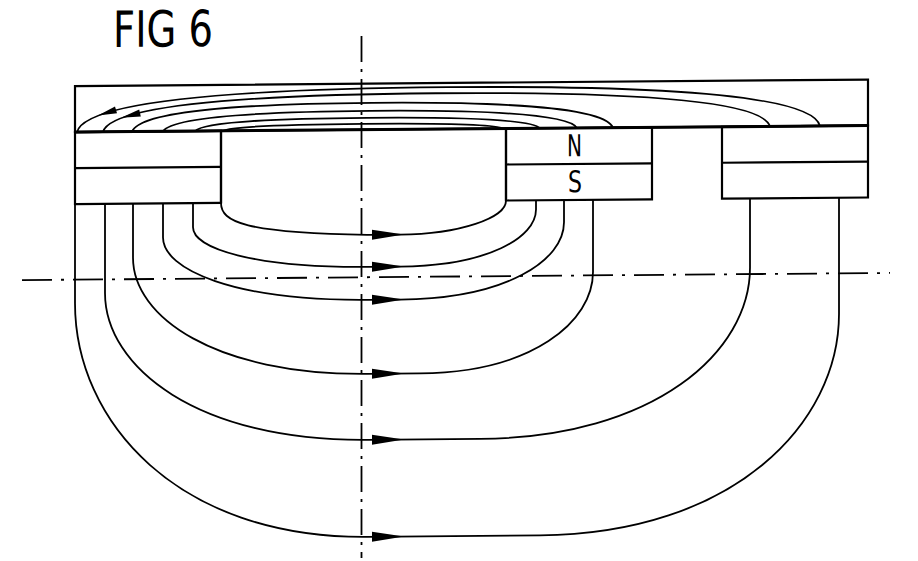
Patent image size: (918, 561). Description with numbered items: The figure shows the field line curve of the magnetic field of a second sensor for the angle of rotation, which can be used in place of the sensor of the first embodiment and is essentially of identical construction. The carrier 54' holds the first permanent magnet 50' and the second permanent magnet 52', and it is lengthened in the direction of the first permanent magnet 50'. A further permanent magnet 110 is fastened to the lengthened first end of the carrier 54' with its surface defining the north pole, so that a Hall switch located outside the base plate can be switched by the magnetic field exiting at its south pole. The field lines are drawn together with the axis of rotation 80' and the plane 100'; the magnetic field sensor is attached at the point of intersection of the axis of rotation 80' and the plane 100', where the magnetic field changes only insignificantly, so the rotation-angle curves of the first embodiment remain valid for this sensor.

The first permanent magnet 50' is at (363, 184).
The second permanent magnet 52' is at (124, 154).
The carrier 54' is at (471, 76).
The axis of rotation 80' is at (408, 296).
The plane 100' is at (459, 309).
The further permanent magnet 110 is at (734, 201).